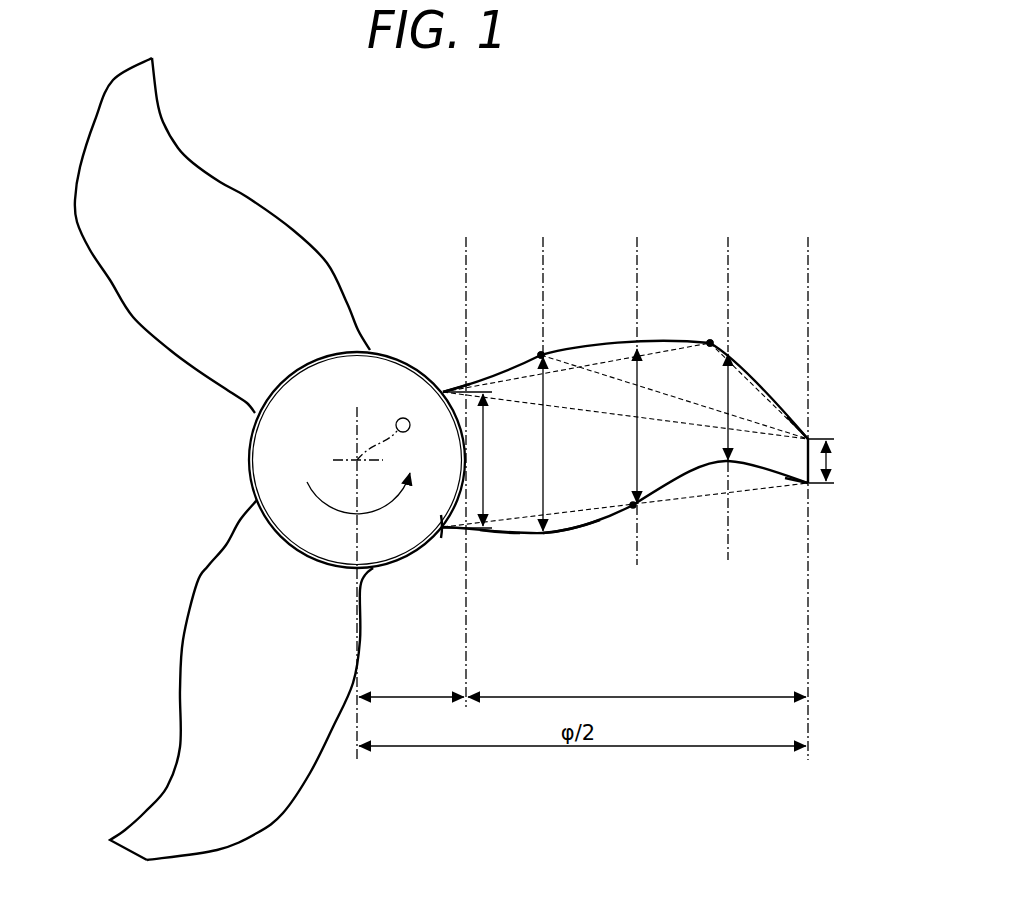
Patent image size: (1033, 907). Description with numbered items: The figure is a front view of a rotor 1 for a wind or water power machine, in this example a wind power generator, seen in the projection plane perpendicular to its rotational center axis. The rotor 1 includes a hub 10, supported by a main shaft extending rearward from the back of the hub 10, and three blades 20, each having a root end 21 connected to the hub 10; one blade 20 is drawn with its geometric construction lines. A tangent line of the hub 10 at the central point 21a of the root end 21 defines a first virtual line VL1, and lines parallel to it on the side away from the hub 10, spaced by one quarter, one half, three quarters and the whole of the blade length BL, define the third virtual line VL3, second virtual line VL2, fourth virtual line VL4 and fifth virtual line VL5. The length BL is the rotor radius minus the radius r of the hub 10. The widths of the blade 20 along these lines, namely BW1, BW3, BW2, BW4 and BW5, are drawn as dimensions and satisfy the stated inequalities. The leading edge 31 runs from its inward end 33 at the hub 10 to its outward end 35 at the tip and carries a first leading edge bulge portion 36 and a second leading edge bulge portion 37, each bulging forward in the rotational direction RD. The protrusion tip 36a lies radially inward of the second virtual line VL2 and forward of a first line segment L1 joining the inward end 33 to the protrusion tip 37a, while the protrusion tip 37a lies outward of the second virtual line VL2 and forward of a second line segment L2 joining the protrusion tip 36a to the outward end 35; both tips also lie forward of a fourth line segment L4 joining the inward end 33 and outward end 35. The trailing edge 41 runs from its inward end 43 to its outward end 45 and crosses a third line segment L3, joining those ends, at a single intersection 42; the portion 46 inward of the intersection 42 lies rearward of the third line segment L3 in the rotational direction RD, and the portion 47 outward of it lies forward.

The rotor 1 is at (441, 459).
The hub 10 is at (273, 463).
The blade 20 is at (190, 271).
The root end 21 is at (460, 531).
The central point 21a is at (497, 534).
The leading edge 31 is at (603, 346).
The inward end 33 is at (446, 387).
The outward end 35 is at (810, 438).
The first leading edge bulge portion 36 is at (556, 348).
The protrusion tip 36a is at (540, 353).
The second leading edge bulge portion 37 is at (720, 348).
The protrusion tip 37a is at (710, 342).
The trailing edge 41 is at (608, 527).
The intersection 42 is at (637, 510).
The inward end 43 is at (445, 533).
The outward end 45 is at (811, 485).
The portion of the trailing edge 46 is at (562, 534).
The portion of the trailing edge 47 is at (697, 472).
The first virtual line VL1 is at (464, 458).
The second virtual line VL2 is at (636, 387).
The third virtual line VL3 is at (542, 282).
The fourth virtual line VL4 is at (726, 384).
The fifth virtual line VL5 is at (807, 484).
The width of the blade along the first virtual line BW1 is at (485, 445).
The width of the blade along the second virtual line BW2 is at (639, 452).
The width of the blade along the third virtual line BW3 is at (544, 460).
The width of the blade along the fourth virtual line BW4 is at (727, 387).
The width of the blade along the fifth virtual line BW5 is at (831, 468).
The first line segment L1 is at (557, 366).
The second line segment L2 is at (756, 421).
The third line segment L3 is at (670, 503).
The fourth line segment L4 is at (588, 411).
The rotational direction RD is at (367, 497).
The radius of the hub r is at (411, 685).
The length of the blade BL is at (637, 685).